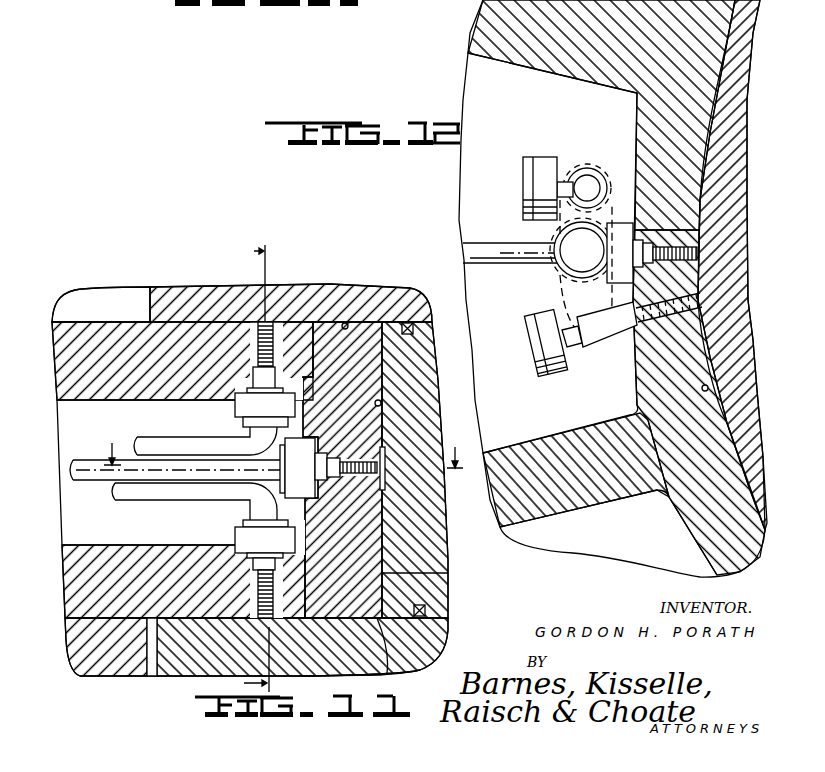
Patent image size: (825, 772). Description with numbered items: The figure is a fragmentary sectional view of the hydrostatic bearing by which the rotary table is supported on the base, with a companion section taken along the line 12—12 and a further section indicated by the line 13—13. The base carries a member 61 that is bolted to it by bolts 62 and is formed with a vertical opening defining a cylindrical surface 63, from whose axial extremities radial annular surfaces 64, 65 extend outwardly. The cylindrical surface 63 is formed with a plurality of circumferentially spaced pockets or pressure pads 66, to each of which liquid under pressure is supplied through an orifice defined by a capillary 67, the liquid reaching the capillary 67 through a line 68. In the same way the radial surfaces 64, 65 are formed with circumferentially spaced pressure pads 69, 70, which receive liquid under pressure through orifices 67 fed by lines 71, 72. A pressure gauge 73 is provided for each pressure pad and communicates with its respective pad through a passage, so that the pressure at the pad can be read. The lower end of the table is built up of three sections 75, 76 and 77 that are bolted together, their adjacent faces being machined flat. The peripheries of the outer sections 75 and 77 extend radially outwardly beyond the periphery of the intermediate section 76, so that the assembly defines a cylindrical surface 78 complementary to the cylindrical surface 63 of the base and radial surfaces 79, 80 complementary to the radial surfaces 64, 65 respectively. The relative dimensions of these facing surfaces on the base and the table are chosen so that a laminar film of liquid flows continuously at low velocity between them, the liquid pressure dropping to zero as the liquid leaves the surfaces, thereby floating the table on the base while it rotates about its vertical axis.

In FIG. 11, the section line 12— 12 is at (284, 443).
In FIG. 11, the section line 13— 13 is at (245, 464).
In FIG. 11, the member 61 is at (68, 376).
In FIG. 11, the bolts 62 is at (80, 601).
In FIG. 12, the bolts 62 is at (578, 547).
In FIG. 11, the cylindrical surface 63 is at (381, 403).
In FIG. 12, the cylindrical surface 63 is at (708, 388).
In FIG. 11, the radial annular surface 64 is at (346, 323).
In FIG. 11, the radial annular surface 65 is at (388, 670).
In FIG. 11, the pressure pads 66 is at (384, 486).
In FIG. 12, the pressure pads 66 is at (700, 268).
In FIG. 11, the capillary 67 is at (342, 476).
In FIG. 11, the line 68 is at (102, 488).
In FIG. 12, the line 68 is at (503, 259).
In FIG. 11, the pressure pads 69 is at (268, 322).
In FIG. 11, the pressure pads 70 is at (253, 619).
In FIG. 12, the pressure pads 70 is at (591, 167).
In FIG. 11, the line 71 is at (174, 449).
In FIG. 11, the line 72 is at (173, 499).
In FIG. 12, the line 72 is at (560, 277).
In FIG. 12, the pressure gauge 73 is at (538, 342).
In FIG. 11, the table section 75 is at (449, 634).
In FIG. 11, the intermediate table section 76 is at (449, 606).
In FIG. 12, the intermediate table section 76 is at (744, 322).
In FIG. 11, the table section 77 is at (410, 294).
In FIG. 11, the cylindrical surface 78 is at (449, 576).
In FIG. 12, the cylindrical surface 78 is at (707, 158).
In FIG. 11, the radial surface 79 is at (203, 318).
In FIG. 11, the radial surface 80 is at (155, 675).